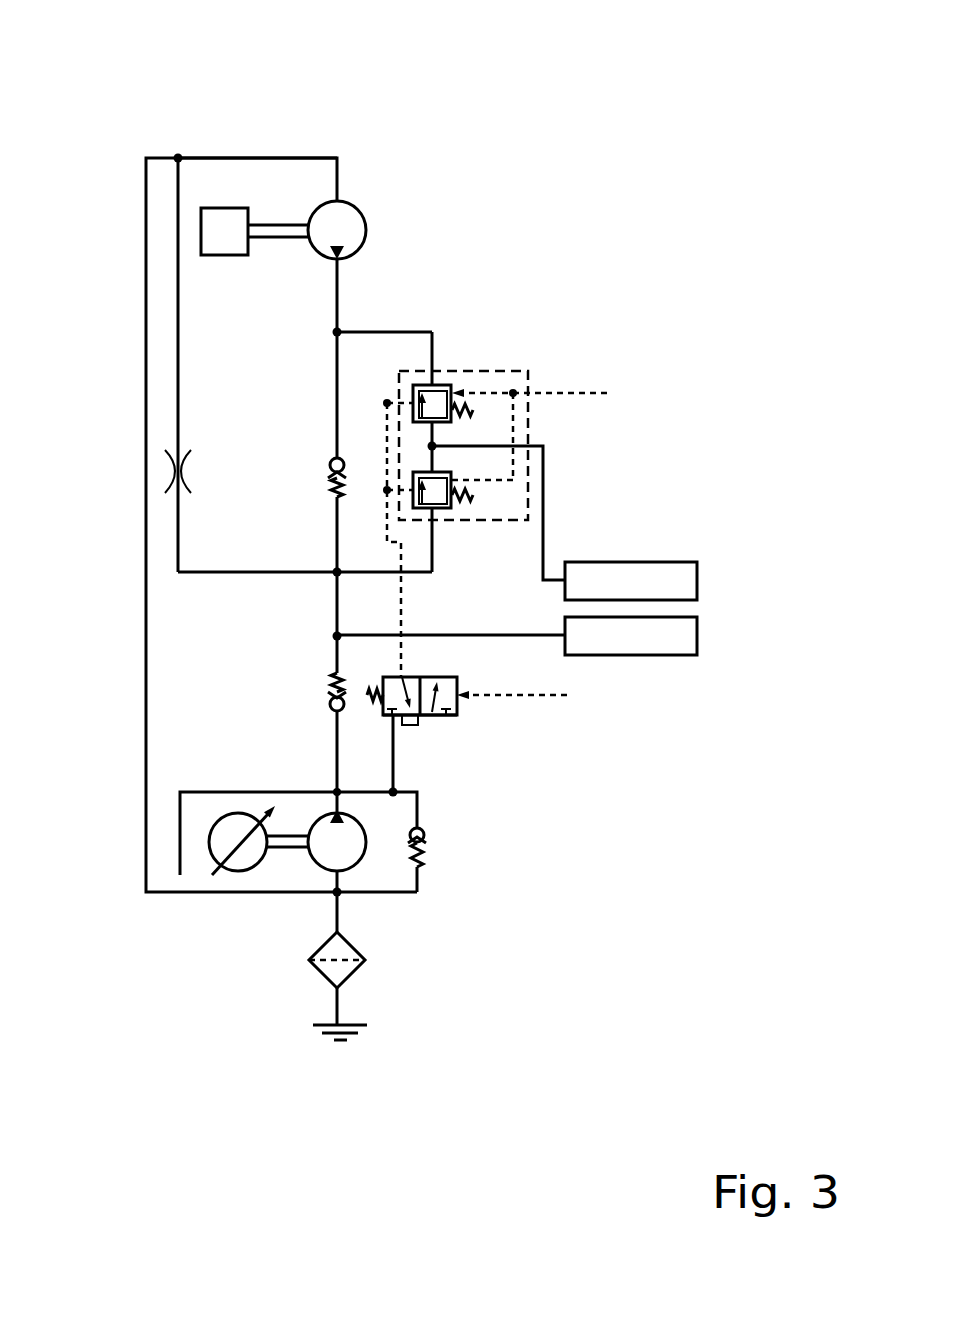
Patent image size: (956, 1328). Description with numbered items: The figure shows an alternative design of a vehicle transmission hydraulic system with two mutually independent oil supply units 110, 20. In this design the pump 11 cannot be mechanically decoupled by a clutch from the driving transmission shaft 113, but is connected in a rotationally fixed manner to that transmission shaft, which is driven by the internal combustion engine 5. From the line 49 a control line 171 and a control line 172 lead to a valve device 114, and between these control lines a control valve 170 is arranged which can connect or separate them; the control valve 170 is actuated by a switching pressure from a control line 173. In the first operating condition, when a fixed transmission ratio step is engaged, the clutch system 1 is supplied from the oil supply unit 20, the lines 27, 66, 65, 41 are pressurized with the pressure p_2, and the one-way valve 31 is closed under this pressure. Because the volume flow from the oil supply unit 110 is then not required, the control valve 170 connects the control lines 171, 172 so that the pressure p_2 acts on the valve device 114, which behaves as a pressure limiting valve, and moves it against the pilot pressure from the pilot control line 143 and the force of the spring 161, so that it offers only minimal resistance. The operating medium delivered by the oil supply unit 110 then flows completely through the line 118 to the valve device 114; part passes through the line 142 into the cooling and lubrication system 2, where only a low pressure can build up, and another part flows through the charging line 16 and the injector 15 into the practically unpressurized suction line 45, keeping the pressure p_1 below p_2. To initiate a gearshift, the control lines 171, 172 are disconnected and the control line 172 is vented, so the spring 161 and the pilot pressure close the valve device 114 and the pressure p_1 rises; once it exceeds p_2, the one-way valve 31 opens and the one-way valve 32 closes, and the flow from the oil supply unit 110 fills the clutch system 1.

The oil supply unit 110 is at (126, 129).
The internal combustion engine 5 is at (223, 232).
The transmission shaft 113 is at (280, 230).
The suction line 45 is at (312, 157).
The pump 11 is at (335, 228).
The line 118 is at (388, 330).
The charging line 16 is at (178, 405).
The injector 15 is at (163, 483).
The one-way valve 31 is at (310, 497).
The line 65 is at (337, 537).
The control line 172 is at (400, 595).
The line 66 is at (337, 642).
The one-way valve 32 is at (310, 703).
The line 27 is at (337, 740).
The line 49 is at (393, 893).
The oil supply unit 20 is at (145, 903).
The valve device 114 is at (480, 368).
The spring 161 is at (473, 412).
The pilot control line 143 is at (567, 393).
The line 142 is at (543, 560).
The cooling and lubrication system 2 is at (683, 580).
The clutch system 1 is at (683, 637).
The line 41 is at (490, 637).
The control line 173 is at (520, 700).
The control valve 170 is at (450, 725).
The control line 171 is at (397, 760).